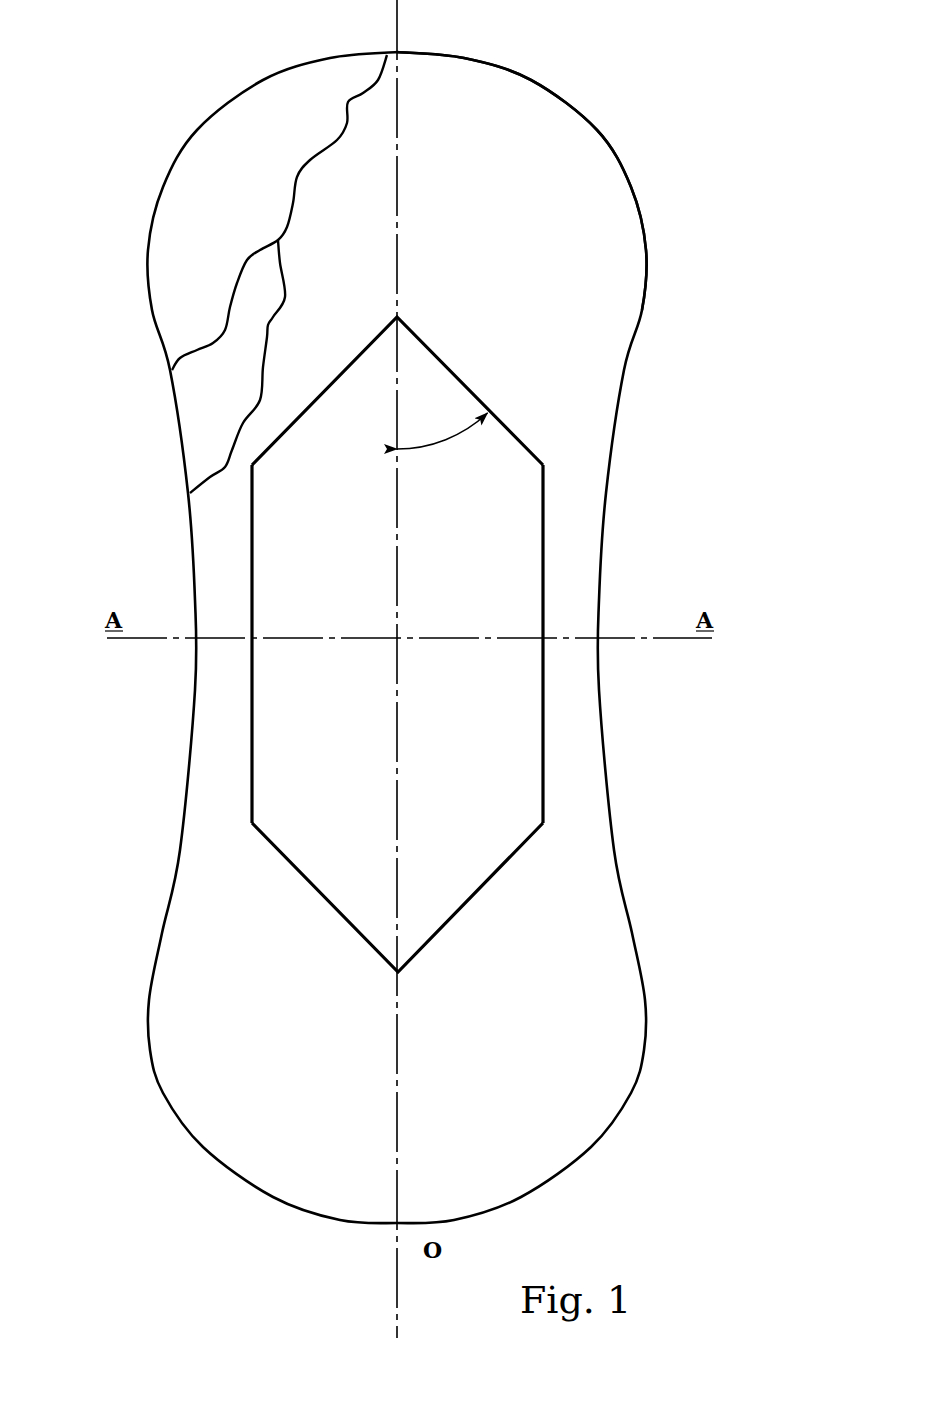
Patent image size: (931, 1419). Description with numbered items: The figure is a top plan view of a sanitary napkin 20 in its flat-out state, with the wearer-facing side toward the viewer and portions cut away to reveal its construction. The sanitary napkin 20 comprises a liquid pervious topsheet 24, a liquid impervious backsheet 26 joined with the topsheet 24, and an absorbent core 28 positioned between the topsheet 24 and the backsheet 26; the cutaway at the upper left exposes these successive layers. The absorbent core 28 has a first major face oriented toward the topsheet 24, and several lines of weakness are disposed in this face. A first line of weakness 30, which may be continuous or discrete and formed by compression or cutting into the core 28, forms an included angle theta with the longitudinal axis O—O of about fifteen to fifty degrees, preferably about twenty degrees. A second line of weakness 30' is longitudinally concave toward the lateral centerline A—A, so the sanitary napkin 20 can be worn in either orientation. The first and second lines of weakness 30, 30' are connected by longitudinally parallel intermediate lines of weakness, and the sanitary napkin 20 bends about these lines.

The sanitary napkin 20 is at (653, 830).
The liquid pervious topsheet 24 is at (243, 184).
The liquid impervious backsheet 26 is at (248, 401).
The absorbent core 28 is at (523, 246).
The first line of weakness 30 is at (493, 346).
The second line of weakness 30' is at (419, 933).